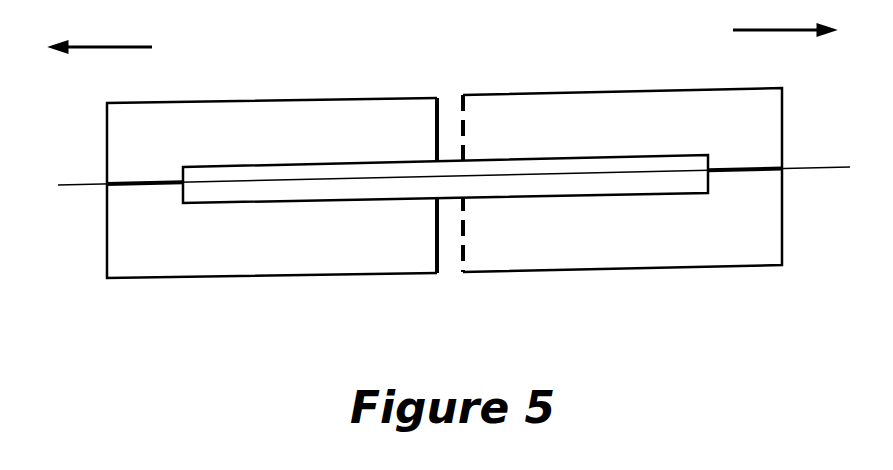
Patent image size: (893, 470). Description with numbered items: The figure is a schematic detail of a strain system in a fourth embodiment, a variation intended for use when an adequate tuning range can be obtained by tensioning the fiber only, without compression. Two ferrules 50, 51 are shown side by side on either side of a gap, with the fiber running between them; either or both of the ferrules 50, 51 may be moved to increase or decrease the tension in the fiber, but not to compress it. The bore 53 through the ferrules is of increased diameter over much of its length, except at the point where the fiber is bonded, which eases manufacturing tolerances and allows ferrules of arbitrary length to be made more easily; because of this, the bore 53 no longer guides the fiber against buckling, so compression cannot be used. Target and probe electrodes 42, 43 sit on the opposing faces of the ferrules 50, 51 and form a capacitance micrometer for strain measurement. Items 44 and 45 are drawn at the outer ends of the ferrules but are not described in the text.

The target electrode 42 is at (435, 125).
The probe electrode 43 is at (463, 127).
The first lead 44 is at (127, 185).
The second lead 45 is at (737, 169).
The ferrule 50 is at (270, 100).
The ferrule 51 is at (600, 92).
The bore 53 is at (230, 183).